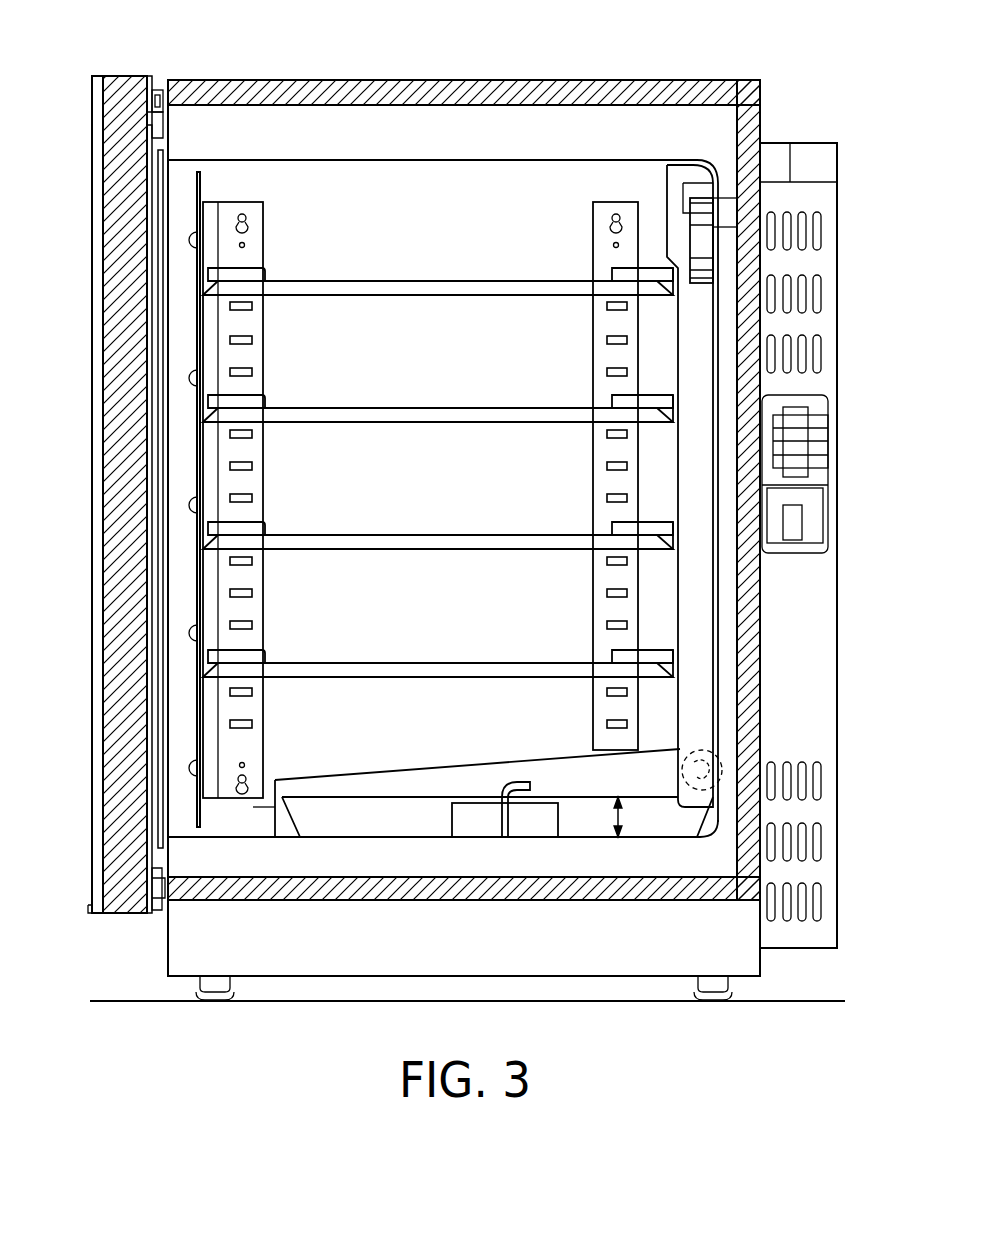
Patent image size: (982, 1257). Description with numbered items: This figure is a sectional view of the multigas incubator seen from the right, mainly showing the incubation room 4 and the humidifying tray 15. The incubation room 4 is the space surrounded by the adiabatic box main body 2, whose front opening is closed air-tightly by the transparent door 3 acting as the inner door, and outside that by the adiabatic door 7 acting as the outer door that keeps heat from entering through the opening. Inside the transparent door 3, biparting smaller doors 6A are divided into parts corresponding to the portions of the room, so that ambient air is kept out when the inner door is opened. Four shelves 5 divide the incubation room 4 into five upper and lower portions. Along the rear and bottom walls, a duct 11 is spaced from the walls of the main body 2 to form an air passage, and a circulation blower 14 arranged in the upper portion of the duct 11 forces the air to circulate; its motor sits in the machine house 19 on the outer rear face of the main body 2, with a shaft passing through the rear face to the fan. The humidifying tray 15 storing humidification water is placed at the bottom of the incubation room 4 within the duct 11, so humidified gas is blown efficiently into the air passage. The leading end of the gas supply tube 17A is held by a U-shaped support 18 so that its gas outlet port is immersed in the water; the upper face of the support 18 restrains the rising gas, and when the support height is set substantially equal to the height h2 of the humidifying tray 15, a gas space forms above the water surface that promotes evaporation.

The adiabatic box main body 2 is at (425, 72).
The transparent door 3 is at (158, 247).
The incubation room 4 is at (291, 196).
The shelf 5 is at (512, 281).
The smaller door 6A is at (197, 346).
The adiabatic door 7 is at (103, 463).
The duct 11 is at (688, 583).
The circulation blower 14 is at (705, 258).
The humidifying tray 15 is at (326, 830).
The gas supply tube 17A is at (506, 832).
The support 18 is at (463, 830).
The machine house 19 is at (792, 682).
The height of the humidifying tray h2 is at (622, 830).